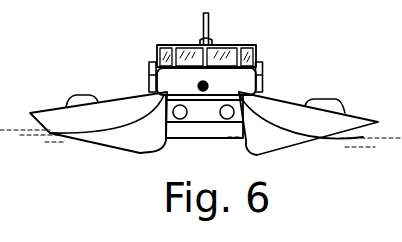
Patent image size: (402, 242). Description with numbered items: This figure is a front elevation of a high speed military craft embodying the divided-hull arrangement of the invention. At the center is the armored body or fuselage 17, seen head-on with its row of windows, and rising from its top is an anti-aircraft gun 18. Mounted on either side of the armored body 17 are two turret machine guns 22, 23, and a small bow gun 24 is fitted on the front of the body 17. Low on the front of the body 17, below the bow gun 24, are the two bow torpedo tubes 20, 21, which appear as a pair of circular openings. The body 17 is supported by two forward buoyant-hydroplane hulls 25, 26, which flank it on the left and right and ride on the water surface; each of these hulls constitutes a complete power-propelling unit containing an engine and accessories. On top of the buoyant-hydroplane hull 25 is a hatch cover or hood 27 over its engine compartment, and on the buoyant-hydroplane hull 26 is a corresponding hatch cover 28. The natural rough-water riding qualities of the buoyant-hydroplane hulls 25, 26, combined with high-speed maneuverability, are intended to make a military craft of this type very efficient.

The armored body 17 is at (250, 46).
The anti-aircraft gun 18 is at (208, 36).
The bow torpedo tube 20 is at (182, 119).
The bow torpedo tube 21 is at (228, 119).
The turret machine gun 22 is at (143, 67).
The turret machine gun 23 is at (271, 79).
The bow gun 24 is at (208, 86).
The buoyant-hydroplane hull 25 is at (98, 122).
The buoyant-hydroplane hull 26 is at (308, 123).
The hatch cover 27 is at (69, 93).
The hatch cover 28 is at (327, 100).